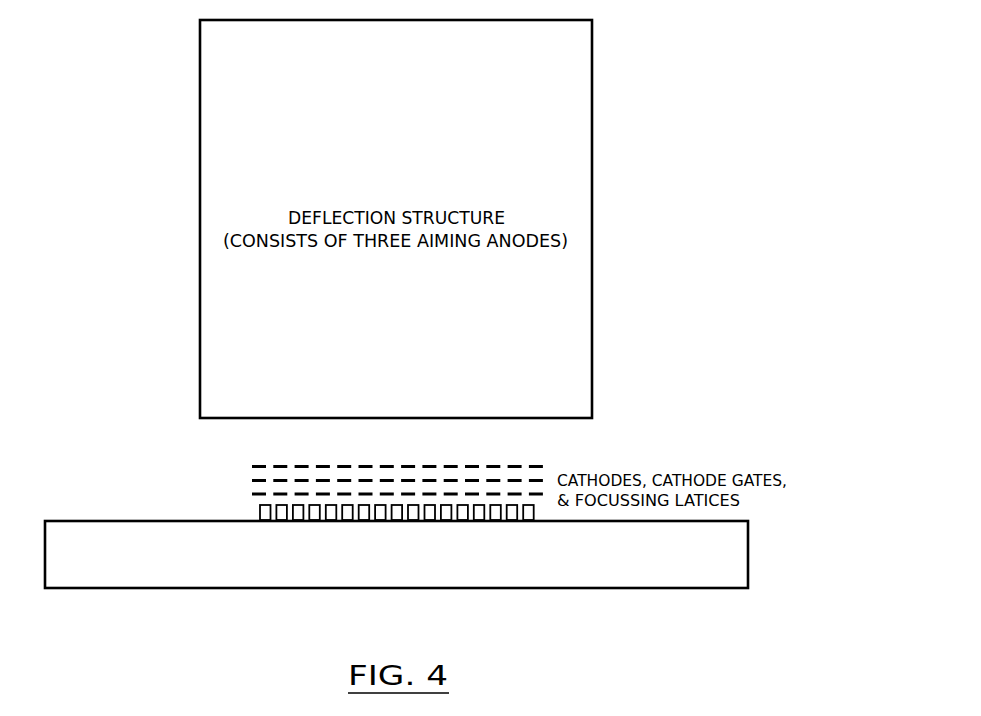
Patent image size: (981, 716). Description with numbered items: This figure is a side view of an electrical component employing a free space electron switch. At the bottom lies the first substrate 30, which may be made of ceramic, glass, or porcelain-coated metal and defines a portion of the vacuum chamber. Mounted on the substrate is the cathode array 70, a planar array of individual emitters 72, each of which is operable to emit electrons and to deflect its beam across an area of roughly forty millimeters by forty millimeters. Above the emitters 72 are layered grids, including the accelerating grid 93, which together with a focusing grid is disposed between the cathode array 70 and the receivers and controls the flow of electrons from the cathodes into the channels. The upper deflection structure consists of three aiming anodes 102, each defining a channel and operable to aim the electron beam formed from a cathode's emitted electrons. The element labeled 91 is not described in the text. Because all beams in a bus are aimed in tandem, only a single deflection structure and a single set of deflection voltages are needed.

The first substrate 30 is at (705, 576).
The cathode array 70 is at (258, 509).
The emitter 72 is at (394, 566).
The cathode gate lattice 91 is at (258, 494).
The accelerating grid 93 is at (255, 480).
The aiming anode 102 is at (543, 467).